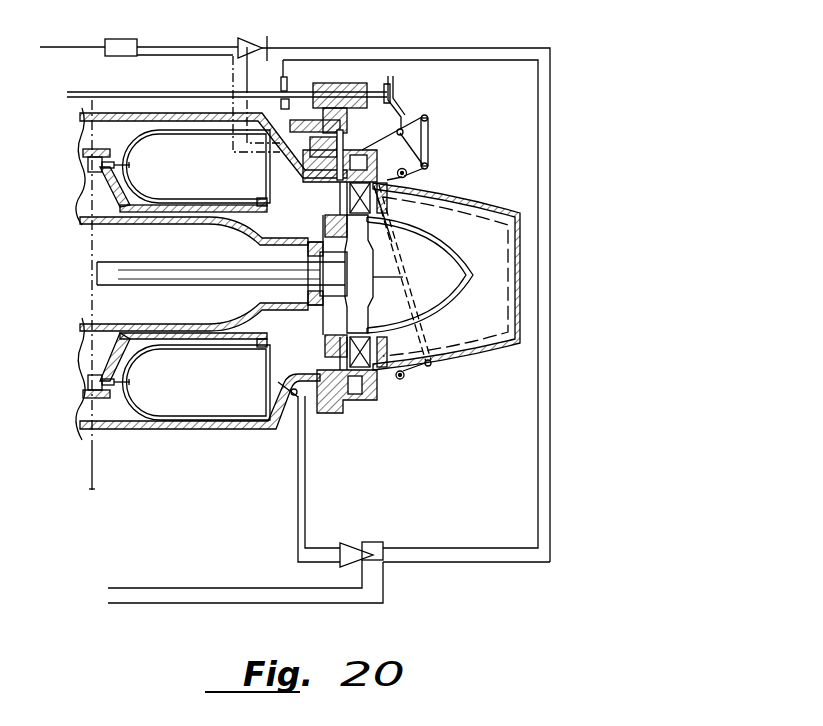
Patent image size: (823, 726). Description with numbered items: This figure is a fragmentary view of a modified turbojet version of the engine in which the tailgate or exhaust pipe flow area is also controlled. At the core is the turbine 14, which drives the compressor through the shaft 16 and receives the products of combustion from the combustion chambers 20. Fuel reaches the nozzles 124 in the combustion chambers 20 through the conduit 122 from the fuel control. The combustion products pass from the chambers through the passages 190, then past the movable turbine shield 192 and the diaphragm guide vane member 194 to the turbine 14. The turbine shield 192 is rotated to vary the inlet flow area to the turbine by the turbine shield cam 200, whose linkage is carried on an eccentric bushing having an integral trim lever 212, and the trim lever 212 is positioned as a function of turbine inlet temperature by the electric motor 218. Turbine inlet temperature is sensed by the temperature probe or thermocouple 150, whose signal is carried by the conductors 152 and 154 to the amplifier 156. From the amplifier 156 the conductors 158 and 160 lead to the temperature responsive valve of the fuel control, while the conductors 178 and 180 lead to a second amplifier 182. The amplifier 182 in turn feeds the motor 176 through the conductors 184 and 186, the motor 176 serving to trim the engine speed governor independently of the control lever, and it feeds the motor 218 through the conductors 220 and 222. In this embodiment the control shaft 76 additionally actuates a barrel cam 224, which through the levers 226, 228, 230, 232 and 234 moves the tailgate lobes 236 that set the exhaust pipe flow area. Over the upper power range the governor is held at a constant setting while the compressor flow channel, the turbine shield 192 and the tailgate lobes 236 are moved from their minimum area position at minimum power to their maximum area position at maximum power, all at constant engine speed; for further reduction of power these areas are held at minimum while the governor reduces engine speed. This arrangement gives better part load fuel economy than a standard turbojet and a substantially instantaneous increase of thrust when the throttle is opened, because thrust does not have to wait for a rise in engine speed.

The turbine 14 is at (374, 274).
The shaft 16 is at (108, 278).
The combustion chambers 20 is at (196, 196).
The shaft 76 is at (80, 97).
The conduit 122 is at (96, 480).
The nozzles 124 is at (130, 165).
The temperature probe or thermocouple 150 is at (272, 430).
The conductor 152 is at (297, 489).
The conductor 154 is at (305, 466).
The amplifier 156 is at (346, 542).
The conductor 158 is at (143, 588).
The conductor 160 is at (160, 604).
The motor 176 is at (107, 15).
The conductor 178 is at (430, 549).
The conductor 180 is at (486, 563).
The amplifier 182 is at (252, 44).
The conductor 184 is at (180, 45).
The conductor 186 is at (177, 56).
The passages 190 is at (270, 235).
The turbine shield 192 is at (333, 210).
The diaphragm guide vane member 194 is at (340, 352).
The turbine shield cam 200 is at (284, 86).
The trim lever 212 is at (258, 228).
The electric motor 218 is at (270, 168).
The conductor 220 is at (248, 88).
The conductor 222 is at (233, 78).
The barrel cam 224 is at (397, 80).
The lever 226 is at (404, 129).
The lever 228 is at (429, 138).
The lever 230 is at (410, 173).
The lever 232 is at (411, 302).
The lever 234 is at (413, 388).
The tailgate lobes 236 is at (483, 196).